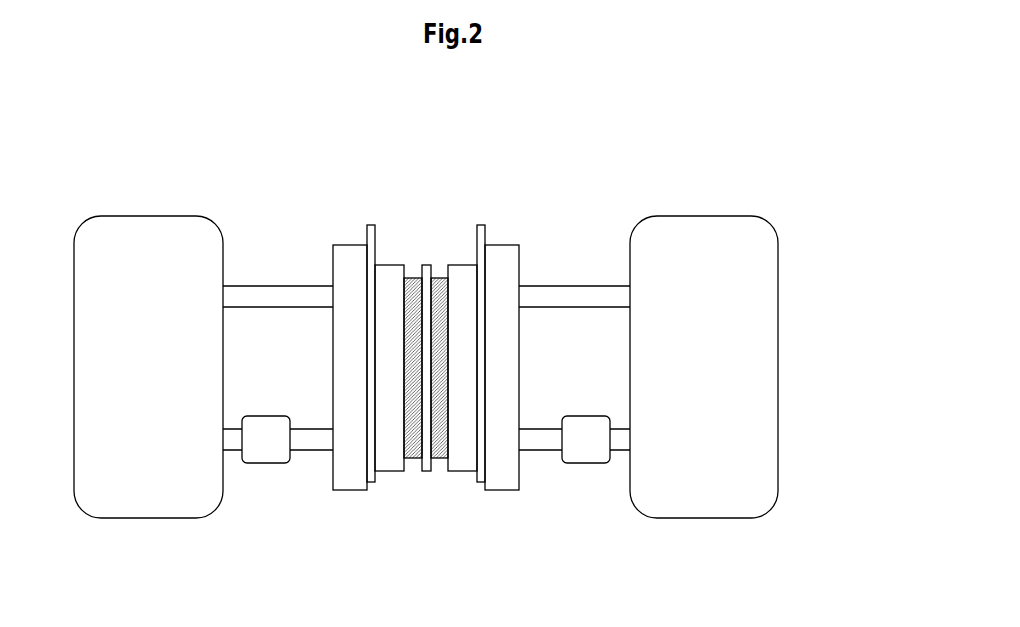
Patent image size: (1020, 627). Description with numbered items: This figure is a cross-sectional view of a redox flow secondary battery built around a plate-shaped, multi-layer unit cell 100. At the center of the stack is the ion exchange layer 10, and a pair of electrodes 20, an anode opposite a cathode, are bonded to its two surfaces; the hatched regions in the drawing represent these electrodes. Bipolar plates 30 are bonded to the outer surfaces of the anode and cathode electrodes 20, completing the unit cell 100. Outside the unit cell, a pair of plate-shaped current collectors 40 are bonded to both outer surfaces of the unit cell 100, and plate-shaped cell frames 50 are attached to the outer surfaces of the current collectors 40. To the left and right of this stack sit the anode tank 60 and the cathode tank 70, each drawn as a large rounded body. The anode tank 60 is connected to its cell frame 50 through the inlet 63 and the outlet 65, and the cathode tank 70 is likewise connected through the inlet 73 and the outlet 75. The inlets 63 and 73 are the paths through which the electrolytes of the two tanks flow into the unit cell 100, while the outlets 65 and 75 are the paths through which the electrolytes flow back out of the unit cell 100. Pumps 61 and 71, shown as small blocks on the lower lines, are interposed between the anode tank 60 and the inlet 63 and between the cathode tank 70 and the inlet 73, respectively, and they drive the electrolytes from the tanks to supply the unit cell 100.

The unit cell 100 is at (493, 150).
The ion exchange layer 10 is at (425, 266).
The electrodes 20 is at (412, 277).
The bipolar plates 30 is at (390, 264).
The current collectors 40 is at (370, 483).
The cell frames 50 is at (348, 492).
The anode tank 60 is at (143, 519).
The pump 61 is at (250, 464).
The inlet 63 is at (305, 451).
The outlet 65 is at (275, 286).
The cathode tank 70 is at (702, 519).
The pump 71 is at (585, 464).
The inlet 73 is at (538, 451).
The outlet 75 is at (573, 286).